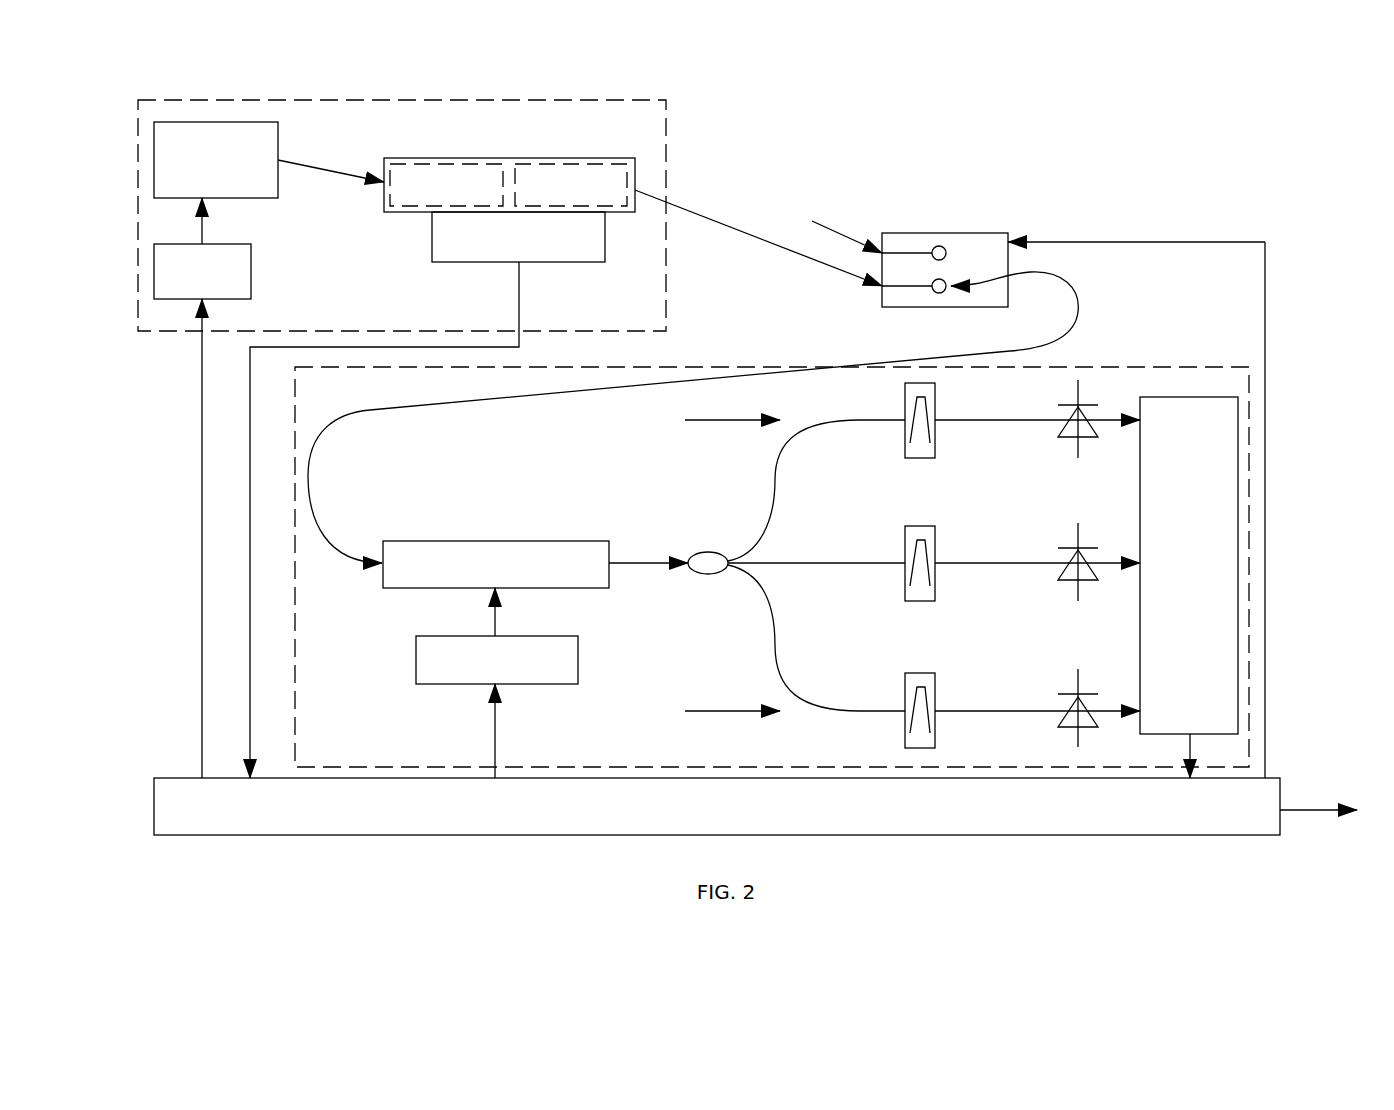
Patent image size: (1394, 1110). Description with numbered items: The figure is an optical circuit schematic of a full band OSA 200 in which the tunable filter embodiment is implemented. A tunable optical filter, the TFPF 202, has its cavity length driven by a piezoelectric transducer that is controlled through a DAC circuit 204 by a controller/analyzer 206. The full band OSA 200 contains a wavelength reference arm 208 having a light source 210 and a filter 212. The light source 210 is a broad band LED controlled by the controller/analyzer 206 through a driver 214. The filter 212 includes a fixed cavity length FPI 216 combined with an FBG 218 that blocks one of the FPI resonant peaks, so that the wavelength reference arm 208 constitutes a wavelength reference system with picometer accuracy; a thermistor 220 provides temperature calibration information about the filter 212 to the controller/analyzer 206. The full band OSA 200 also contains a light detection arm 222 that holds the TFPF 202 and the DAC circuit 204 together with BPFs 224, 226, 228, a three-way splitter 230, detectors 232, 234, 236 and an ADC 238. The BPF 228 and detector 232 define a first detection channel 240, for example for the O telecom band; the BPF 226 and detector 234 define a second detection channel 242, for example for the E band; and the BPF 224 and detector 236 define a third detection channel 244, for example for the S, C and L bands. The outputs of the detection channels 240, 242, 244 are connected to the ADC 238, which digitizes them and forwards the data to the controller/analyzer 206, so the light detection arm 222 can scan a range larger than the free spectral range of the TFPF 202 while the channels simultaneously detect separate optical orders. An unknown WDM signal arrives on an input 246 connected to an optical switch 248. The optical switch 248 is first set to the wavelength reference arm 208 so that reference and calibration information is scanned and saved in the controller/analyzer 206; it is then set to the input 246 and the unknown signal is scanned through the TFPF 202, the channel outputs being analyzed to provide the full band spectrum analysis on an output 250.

The full band OSA 200 is at (120, 112).
The TFPF 202 is at (535, 564).
The DAC circuit 204 is at (497, 683).
The controller/analyzer 206 is at (717, 806).
The wavelength reference arm 208 is at (668, 143).
The light source 210 is at (269, 160).
The filter 212 is at (505, 158).
The driver 214 is at (202, 488).
The fixed cavity length FPI 216 is at (446, 185).
The FBG 218 is at (571, 185).
The thermistor 220 is at (427, 495).
The light detection arm 222 is at (295, 510).
The BPF 224 is at (936, 695).
The BPF 226 is at (936, 540).
The BPF 228 is at (936, 412).
The three-way splitter 230 is at (705, 575).
The detector 232 is at (1072, 440).
The detector 234 is at (1072, 583).
The detector 236 is at (1072, 728).
The ADC 238 is at (1189, 587).
The first detection channel 240 is at (711, 421).
The second detection channel 242 is at (800, 553).
The third detection channel 244 is at (711, 712).
The input 246 is at (842, 232).
The optical switch 248 is at (912, 307).
The output 250 is at (1300, 808).